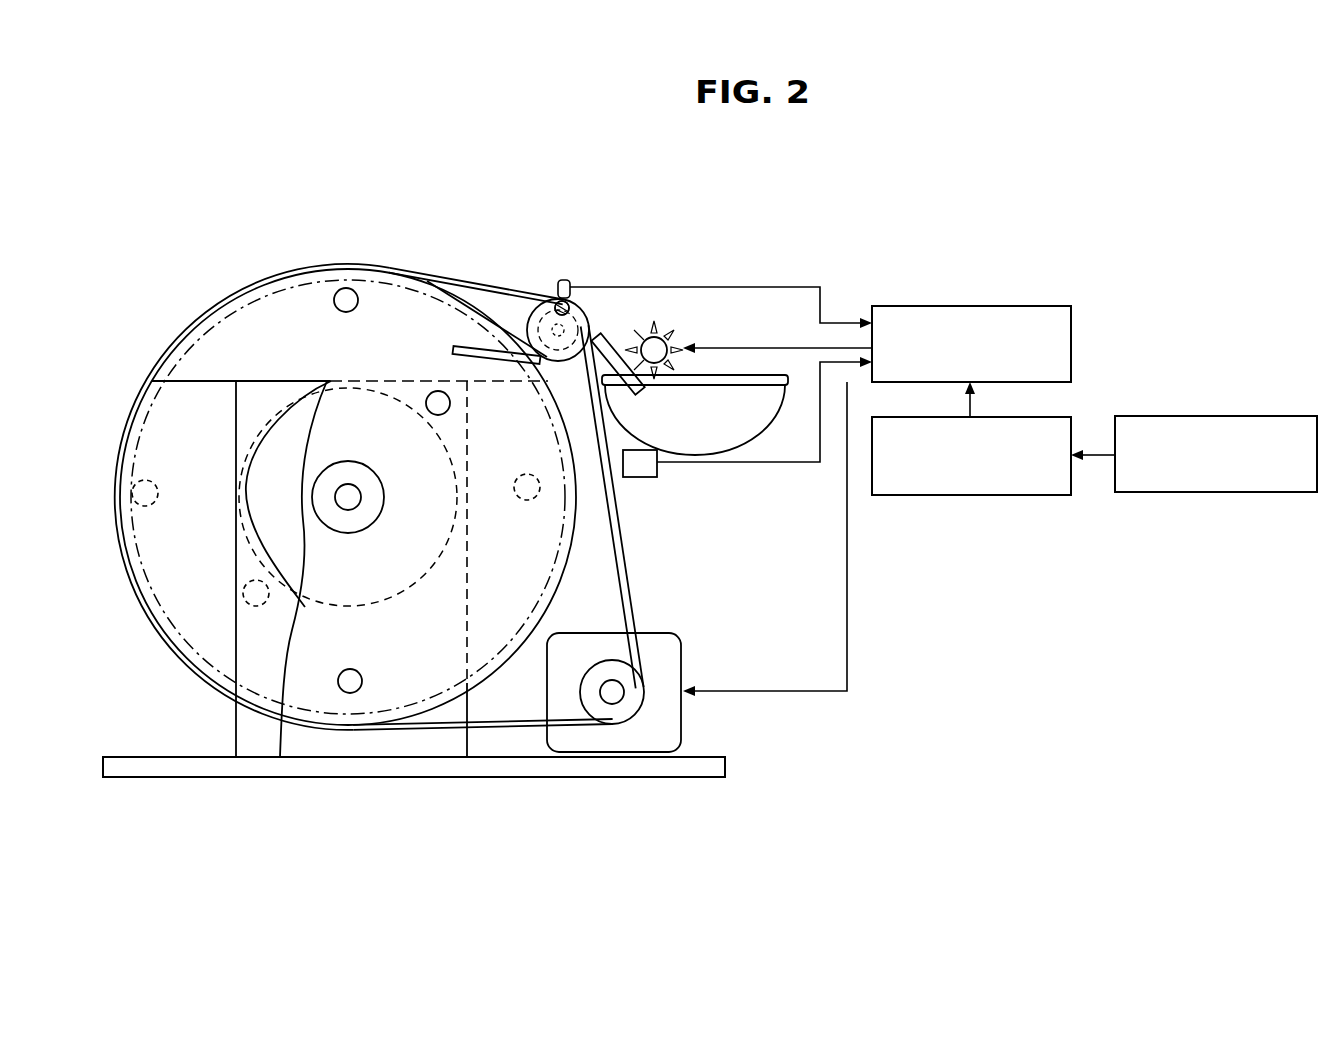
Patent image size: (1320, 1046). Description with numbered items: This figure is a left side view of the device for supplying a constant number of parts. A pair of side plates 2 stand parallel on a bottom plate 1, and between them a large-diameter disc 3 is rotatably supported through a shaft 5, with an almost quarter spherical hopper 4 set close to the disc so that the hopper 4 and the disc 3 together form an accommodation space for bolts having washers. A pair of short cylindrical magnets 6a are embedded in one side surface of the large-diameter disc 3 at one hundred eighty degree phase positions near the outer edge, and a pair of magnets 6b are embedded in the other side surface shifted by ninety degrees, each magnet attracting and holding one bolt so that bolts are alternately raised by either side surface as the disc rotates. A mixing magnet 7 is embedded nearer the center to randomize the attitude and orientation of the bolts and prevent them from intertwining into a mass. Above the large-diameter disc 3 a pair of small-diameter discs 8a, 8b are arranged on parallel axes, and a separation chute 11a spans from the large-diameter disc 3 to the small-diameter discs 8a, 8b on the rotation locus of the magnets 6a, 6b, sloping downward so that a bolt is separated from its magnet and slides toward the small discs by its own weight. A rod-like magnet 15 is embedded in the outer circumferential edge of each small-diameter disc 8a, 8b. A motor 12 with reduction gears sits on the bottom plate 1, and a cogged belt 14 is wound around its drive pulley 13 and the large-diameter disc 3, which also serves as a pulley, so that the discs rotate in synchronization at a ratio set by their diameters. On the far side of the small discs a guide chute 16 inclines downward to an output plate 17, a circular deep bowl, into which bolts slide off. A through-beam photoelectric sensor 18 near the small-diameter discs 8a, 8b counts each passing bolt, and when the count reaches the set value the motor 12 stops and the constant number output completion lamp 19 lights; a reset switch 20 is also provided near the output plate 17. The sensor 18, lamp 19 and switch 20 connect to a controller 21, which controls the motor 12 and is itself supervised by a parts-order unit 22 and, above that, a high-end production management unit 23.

The bottom plate 1 is at (193, 768).
The side plate 2 is at (236, 634).
The large-diameter disc 3 is at (382, 315).
The hopper 4 is at (183, 432).
The shaft 5 is at (362, 497).
The magnet 6a is at (345, 288).
The magnet 6b is at (140, 505).
The mixing magnet 7 is at (438, 391).
The small-diameter disc 8a is at (577, 303).
The small-diameter disc 8b is at (562, 308).
The separation chute 11a is at (466, 346).
The motor 12 is at (644, 742).
The drive pulley 13 is at (598, 707).
The cogged belt 14 is at (633, 590).
The rod-like magnet 15 is at (572, 299).
The guide chute 16 is at (615, 334).
The output plate 17 is at (753, 387).
The photoelectric sensor 18 is at (560, 281).
The constant number output completion lamp 19 is at (667, 340).
The reset switch 20 is at (645, 478).
The controller 21 is at (976, 306).
The parts-order unit 22 is at (1030, 495).
The high-end production management unit 23 is at (1215, 416).